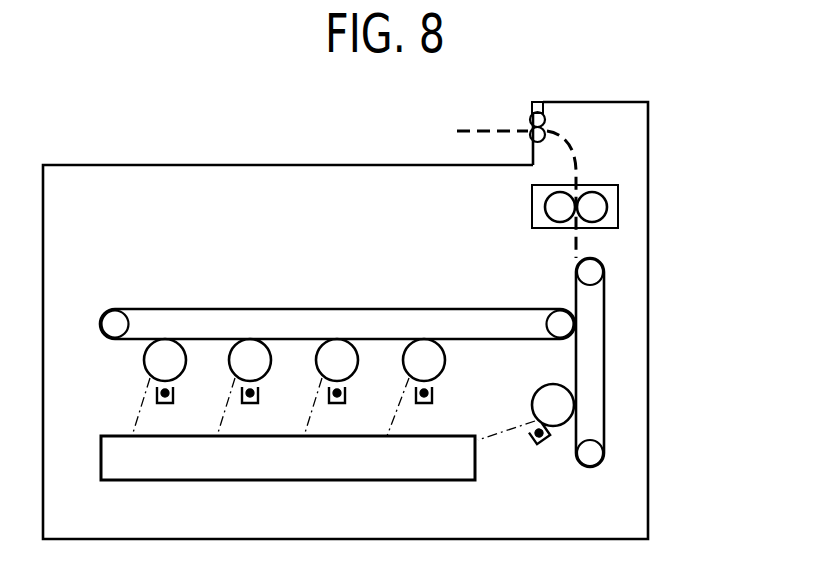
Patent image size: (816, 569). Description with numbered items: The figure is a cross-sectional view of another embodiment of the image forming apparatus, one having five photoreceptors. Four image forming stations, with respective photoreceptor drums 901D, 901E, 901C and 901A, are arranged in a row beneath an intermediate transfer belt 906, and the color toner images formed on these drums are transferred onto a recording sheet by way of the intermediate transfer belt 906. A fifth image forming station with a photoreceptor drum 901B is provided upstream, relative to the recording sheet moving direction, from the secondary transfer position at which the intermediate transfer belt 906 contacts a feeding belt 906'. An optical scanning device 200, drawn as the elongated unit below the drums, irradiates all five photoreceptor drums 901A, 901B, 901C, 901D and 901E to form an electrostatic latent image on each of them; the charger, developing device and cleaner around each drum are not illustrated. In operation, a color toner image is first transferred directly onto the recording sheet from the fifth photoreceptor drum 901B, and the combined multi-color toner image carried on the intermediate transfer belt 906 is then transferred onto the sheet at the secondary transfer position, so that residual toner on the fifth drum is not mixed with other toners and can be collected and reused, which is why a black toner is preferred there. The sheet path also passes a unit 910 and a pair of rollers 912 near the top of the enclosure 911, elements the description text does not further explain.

The housing 911 is at (280, 165).
The paper feed rollers 912 is at (538, 102).
The fixing unit 910 is at (618, 205).
The intermediate transfer belt 906 is at (337, 301).
The feeding belt 906' is at (646, 362).
The photoreceptor drum 901A is at (424, 345).
The photoreceptor drum 901B is at (545, 396).
The photoreceptor drum 901C is at (337, 345).
The photoreceptor drum 901D is at (165, 345).
The photoreceptor drum 901E is at (250, 345).
The optical scanning device 200 is at (280, 470).